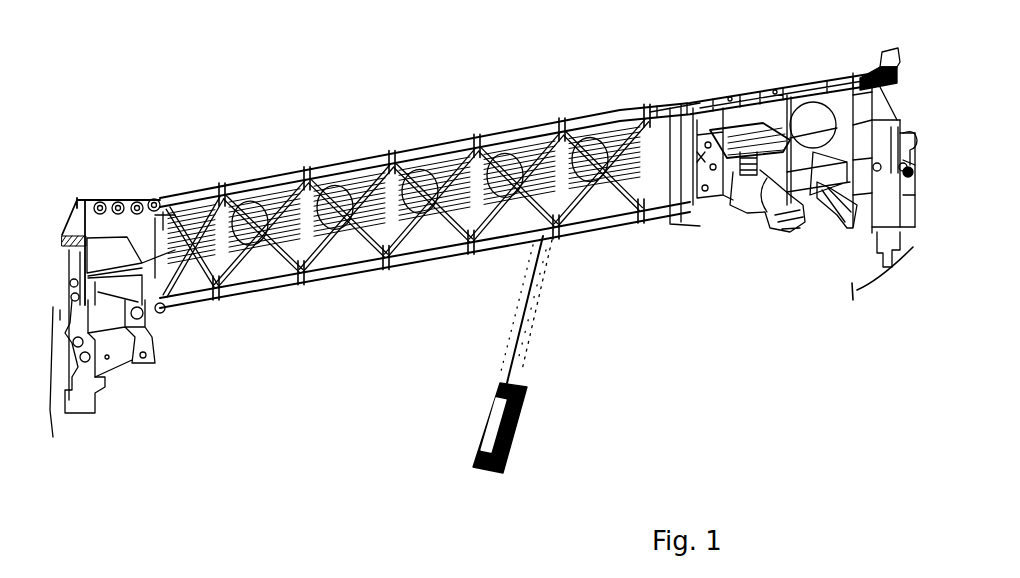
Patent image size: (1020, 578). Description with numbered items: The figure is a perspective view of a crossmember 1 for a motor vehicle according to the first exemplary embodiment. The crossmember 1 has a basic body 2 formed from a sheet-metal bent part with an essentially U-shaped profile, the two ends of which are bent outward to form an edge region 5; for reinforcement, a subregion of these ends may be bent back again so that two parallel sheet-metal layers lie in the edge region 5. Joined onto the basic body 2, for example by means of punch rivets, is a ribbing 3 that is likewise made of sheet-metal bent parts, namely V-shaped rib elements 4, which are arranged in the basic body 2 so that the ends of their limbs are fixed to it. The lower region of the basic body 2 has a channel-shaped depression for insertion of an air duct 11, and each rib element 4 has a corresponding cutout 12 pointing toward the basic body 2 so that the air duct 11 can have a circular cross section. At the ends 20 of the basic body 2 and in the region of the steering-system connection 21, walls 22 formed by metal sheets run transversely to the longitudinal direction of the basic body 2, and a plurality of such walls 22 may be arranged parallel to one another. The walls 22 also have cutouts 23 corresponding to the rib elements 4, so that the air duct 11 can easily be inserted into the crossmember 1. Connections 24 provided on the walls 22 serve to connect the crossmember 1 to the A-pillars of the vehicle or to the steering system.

The crossmember 1 is at (517, 197).
The basic body 2 is at (213, 200).
The ribbing 3 is at (256, 273).
The V-shaped rib element 4 is at (367, 183).
The edge region 5 is at (438, 153).
The air duct 11 is at (301, 284).
The cutout 12 is at (383, 262).
The end 20 is at (850, 290).
The steering-system connection 21 is at (765, 268).
The wall 22 is at (703, 205).
The cutout 23 is at (621, 185).
The connection 24 is at (688, 108).